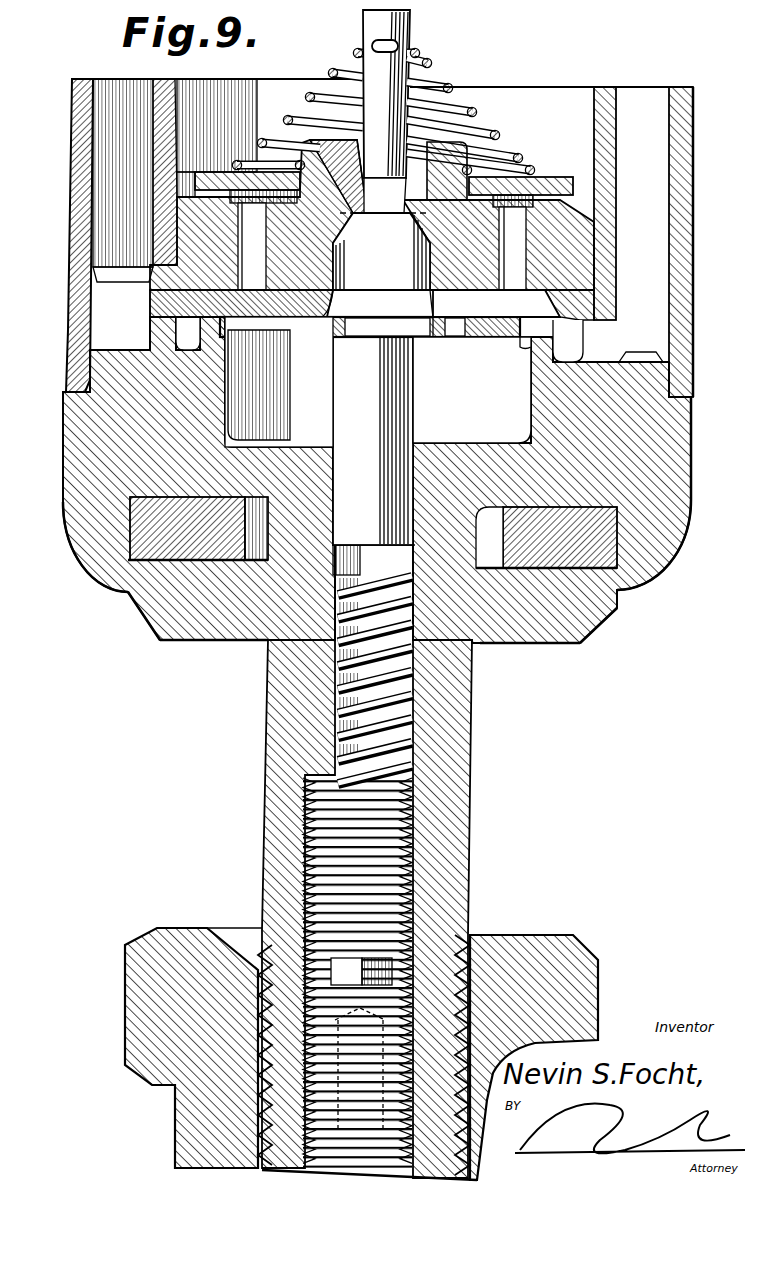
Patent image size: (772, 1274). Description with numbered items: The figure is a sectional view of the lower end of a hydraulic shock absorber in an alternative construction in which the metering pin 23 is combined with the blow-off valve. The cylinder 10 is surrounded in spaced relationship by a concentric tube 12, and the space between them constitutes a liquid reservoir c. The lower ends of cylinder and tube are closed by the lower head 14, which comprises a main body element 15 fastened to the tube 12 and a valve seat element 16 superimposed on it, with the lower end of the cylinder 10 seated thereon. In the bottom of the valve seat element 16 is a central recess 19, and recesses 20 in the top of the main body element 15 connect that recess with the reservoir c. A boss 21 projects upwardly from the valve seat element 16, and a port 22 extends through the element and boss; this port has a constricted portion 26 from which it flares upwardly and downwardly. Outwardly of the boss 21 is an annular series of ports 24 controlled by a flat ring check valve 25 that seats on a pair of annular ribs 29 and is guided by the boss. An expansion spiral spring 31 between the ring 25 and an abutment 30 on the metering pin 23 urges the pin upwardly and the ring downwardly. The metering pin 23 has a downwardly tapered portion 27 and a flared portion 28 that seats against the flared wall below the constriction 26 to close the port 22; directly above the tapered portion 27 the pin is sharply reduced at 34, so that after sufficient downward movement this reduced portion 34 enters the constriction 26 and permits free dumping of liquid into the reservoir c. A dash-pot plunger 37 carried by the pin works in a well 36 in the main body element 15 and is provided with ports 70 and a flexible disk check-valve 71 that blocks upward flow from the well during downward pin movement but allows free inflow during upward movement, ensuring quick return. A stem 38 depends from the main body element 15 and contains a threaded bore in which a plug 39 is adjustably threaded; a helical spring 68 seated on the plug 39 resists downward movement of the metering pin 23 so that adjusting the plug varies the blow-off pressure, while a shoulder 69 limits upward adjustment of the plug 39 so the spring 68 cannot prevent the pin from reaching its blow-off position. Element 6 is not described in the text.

The abutment 30 is at (410, 48).
The cylinder 10 is at (614, 98).
The boss 21 is at (316, 142).
The check valve 25 is at (250, 172).
The expansion spiral spring 31 is at (470, 104).
The chamber 6 is at (502, 104).
The annular ribs 29 is at (540, 195).
The tube 12 is at (82, 178).
The reduced portion 34 is at (418, 168).
The liquid reservoir c is at (655, 175).
The constricted portion 26 is at (352, 222).
The tapered portion 27 is at (410, 217).
The port 22 is at (335, 258).
The flared portion 28 is at (412, 232).
The ports 24 is at (520, 230).
The valve seat element 16 is at (165, 287).
The central recess 19 is at (335, 313).
The metering pin 23 is at (377, 361).
The ports 70 is at (476, 337).
The recesses 20 is at (100, 341).
The check-valve 71 is at (306, 350).
The dash-pot plunger 37 is at (512, 340).
The well 36 is at (472, 390).
The main body element 15 is at (666, 462).
The lower head 14 is at (66, 500).
The helical spring 68 is at (400, 700).
The shoulder 69 is at (335, 742).
The stem 38 is at (275, 868).
The plug 39 is at (415, 870).